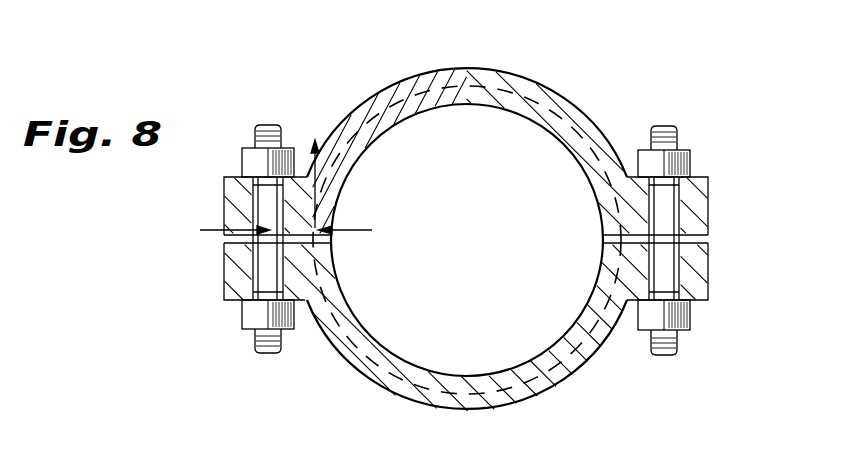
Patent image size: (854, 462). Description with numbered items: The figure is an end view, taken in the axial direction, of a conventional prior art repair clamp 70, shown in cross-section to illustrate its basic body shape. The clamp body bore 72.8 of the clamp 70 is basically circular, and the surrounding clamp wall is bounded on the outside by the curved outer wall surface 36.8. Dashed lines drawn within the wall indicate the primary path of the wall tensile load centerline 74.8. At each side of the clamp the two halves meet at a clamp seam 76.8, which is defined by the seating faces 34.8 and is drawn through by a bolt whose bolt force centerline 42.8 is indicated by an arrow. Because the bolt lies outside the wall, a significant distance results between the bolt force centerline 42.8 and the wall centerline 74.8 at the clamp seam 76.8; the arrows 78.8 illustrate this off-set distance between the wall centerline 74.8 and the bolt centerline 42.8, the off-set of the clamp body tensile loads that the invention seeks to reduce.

The repair clamp 70 is at (578, 106).
The clamp body bore 72.8 is at (490, 251).
The wall tensile load centerline 74.8 is at (390, 104).
The clamp seam 76.8 is at (222, 240).
The arrows 78.8 is at (222, 229).
The seating faces 34.8 is at (226, 244).
The curved outer wall surface 36.8 is at (382, 388).
The bolt force centerline 42.8 is at (269, 124).